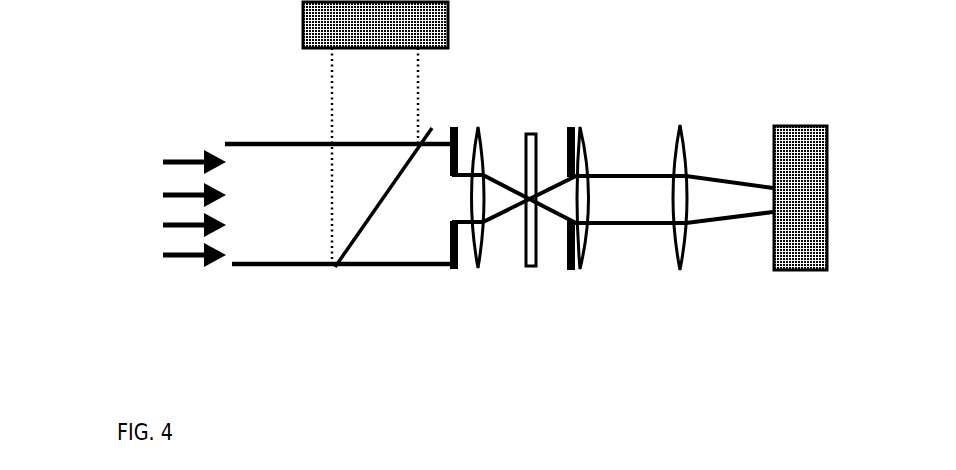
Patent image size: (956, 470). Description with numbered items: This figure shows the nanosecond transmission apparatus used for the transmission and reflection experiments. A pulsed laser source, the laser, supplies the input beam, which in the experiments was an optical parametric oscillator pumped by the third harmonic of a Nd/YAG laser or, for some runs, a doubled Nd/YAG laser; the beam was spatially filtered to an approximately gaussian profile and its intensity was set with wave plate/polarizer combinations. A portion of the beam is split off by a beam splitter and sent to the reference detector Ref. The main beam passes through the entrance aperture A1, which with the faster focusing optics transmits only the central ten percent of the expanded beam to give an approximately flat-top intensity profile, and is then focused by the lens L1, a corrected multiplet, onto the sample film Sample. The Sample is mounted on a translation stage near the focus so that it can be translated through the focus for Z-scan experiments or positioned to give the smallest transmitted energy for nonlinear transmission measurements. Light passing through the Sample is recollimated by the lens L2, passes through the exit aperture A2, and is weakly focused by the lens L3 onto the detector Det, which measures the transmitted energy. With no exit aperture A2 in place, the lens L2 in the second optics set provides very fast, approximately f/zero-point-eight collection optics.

The element laser is at (129, 208).
The reference detector Ref is at (416, 133).
The entrance aperture A1 is at (454, 225).
The lens L1 is at (478, 173).
The sample Sample is at (532, 300).
The exit aperture A2 is at (583, 225).
The lens L2 is at (591, 174).
The lens L3 is at (683, 174).
The detector Det is at (803, 174).